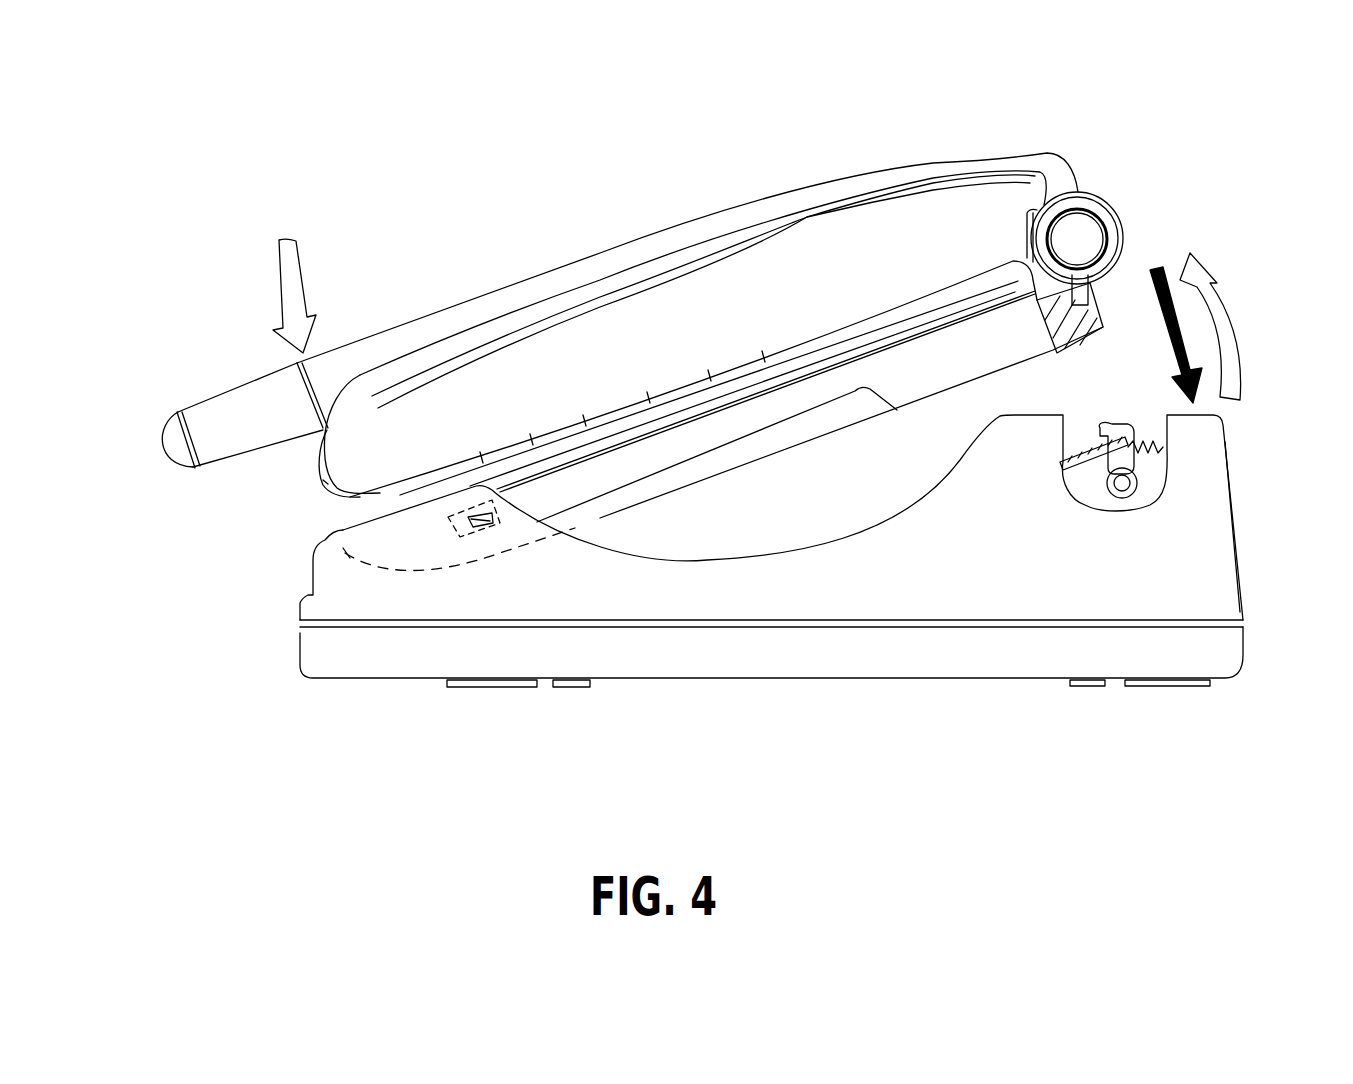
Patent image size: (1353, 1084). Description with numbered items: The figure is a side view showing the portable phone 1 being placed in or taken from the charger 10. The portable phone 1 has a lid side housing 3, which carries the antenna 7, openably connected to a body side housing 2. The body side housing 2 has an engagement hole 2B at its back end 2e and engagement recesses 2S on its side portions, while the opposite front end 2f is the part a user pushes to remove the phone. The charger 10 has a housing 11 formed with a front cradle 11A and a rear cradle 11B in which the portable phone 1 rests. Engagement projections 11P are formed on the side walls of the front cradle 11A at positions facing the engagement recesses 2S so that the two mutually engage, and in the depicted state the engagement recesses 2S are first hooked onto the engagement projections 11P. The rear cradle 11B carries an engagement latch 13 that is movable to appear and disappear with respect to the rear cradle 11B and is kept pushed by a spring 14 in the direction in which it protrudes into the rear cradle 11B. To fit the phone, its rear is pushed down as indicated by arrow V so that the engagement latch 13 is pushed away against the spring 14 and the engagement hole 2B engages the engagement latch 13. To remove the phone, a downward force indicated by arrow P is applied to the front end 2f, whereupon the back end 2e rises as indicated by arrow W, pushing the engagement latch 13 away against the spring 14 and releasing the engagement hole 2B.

The portable phone 1 is at (630, 222).
The body side housing 2 is at (774, 456).
The engagement hole 2B is at (1077, 262).
The back end 2e is at (1068, 327).
The front end 2f is at (377, 570).
The engagement recesses 2S is at (467, 543).
The lid side housing 3 is at (479, 294).
The antenna 7 is at (243, 413).
The charger 10 is at (273, 624).
The housing 11 is at (921, 572).
The front cradle 11A is at (399, 534).
The rear cradle 11B is at (1020, 442).
The engagement projections 11P is at (485, 530).
The engagement latch 13 is at (1115, 430).
The spring 14 is at (1165, 451).